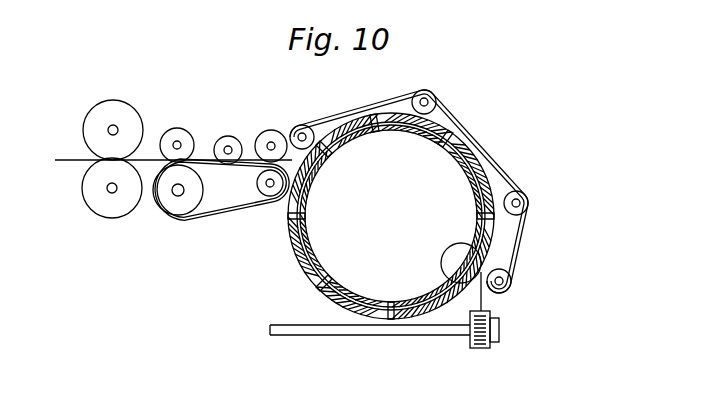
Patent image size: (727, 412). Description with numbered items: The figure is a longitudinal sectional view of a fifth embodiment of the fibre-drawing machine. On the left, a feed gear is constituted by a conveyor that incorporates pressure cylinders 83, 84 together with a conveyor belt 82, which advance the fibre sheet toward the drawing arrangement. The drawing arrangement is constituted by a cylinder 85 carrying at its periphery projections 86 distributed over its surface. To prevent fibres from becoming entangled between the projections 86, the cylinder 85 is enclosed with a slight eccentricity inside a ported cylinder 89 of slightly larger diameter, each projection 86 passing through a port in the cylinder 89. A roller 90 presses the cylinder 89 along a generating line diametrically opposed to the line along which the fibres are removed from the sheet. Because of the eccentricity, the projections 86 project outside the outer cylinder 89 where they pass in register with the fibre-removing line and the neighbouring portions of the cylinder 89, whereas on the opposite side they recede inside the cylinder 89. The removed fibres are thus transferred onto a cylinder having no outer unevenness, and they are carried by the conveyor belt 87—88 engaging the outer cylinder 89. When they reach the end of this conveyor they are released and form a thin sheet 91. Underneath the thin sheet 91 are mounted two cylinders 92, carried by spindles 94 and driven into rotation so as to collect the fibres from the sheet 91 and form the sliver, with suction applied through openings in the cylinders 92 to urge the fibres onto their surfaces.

The conveyor belt 82 is at (220, 213).
The pressure cylinders 83 is at (108, 108).
The pressure cylinders 84 is at (265, 133).
The cylinder 85 is at (300, 265).
The projections 86 is at (290, 220).
The conveyor belt 87 is at (483, 148).
The conveyor belt rollers 88 is at (302, 132).
The ported cylinder 89 is at (353, 127).
The roller 90 is at (455, 256).
The thin sheet 91 is at (483, 305).
The cylinders 92 is at (482, 348).
The spindles 94 is at (362, 330).